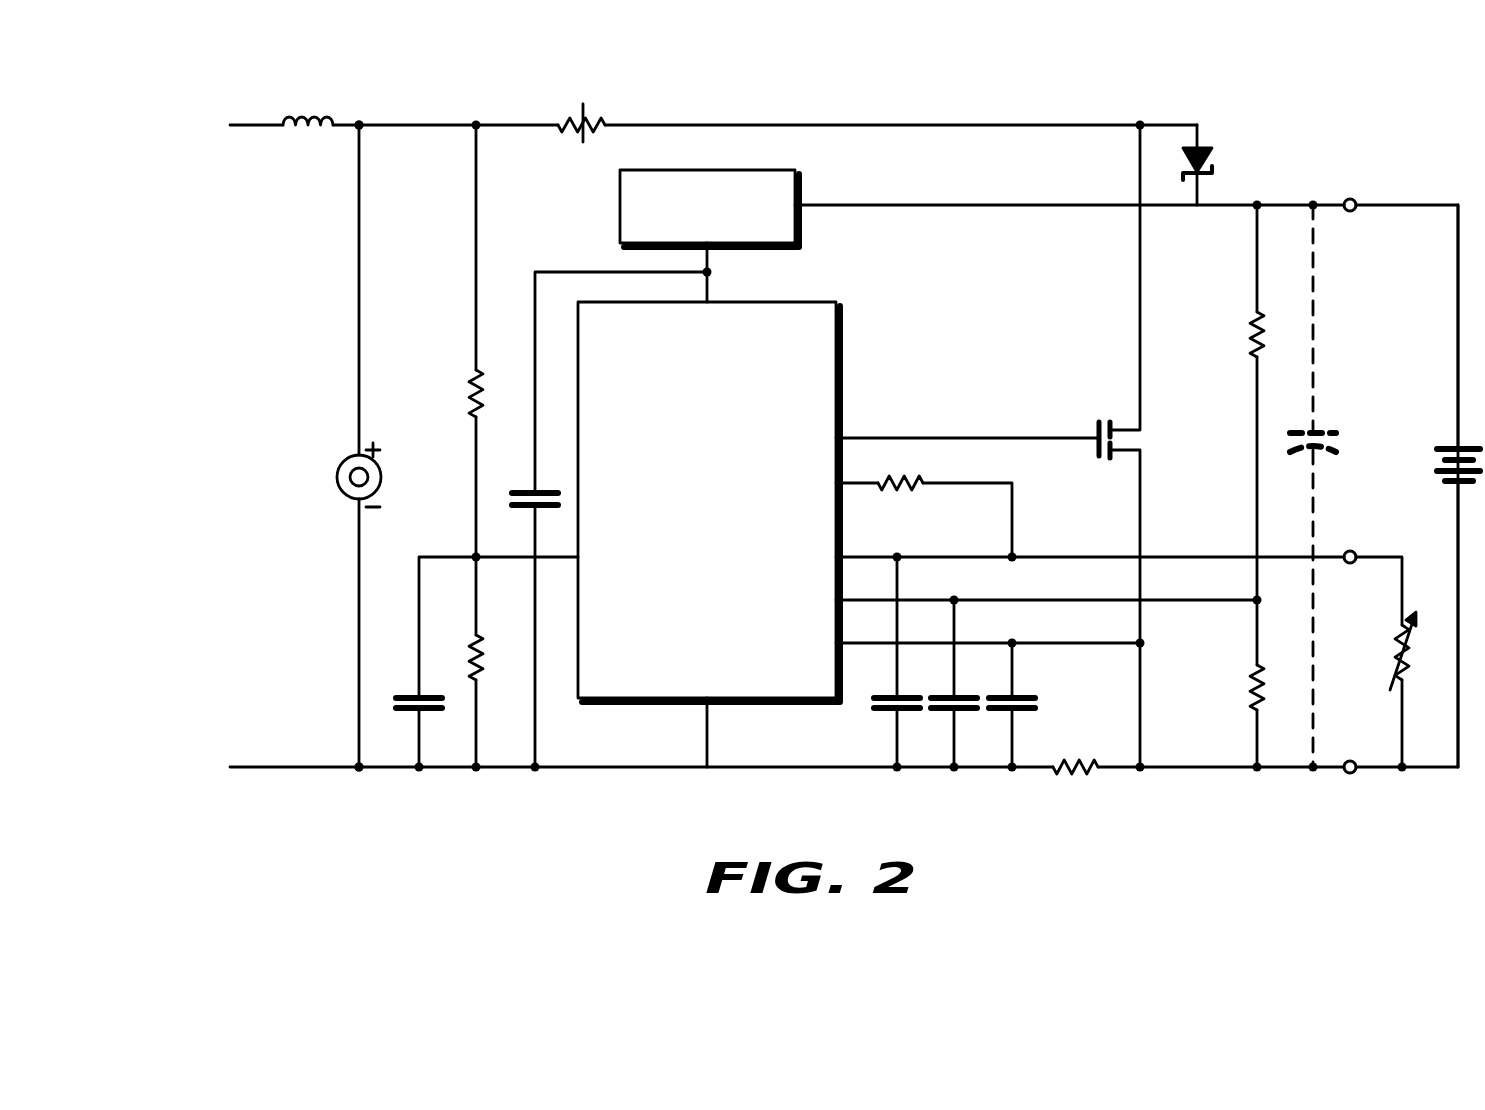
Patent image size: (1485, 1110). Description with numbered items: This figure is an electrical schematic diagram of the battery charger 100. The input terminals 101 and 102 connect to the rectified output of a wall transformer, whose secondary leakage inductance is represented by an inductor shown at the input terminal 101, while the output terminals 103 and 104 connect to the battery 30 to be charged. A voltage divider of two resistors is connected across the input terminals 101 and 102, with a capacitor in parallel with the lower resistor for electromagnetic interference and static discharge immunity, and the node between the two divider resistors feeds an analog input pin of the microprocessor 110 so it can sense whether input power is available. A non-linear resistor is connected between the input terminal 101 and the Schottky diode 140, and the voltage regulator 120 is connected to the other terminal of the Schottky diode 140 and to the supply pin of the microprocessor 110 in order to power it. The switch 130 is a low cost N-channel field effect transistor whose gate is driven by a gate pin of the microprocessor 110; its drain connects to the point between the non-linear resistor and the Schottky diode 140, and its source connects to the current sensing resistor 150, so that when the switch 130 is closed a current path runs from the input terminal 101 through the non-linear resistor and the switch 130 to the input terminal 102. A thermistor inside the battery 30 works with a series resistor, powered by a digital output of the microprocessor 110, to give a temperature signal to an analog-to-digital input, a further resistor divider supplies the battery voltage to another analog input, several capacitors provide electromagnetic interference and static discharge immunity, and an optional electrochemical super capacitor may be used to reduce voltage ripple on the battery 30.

The battery charger 100 is at (815, 455).
The input terminal 101 is at (360, 125).
The input terminal 102 is at (359, 767).
The output terminal 103 is at (1354, 200).
The output terminal 104 is at (1350, 774).
The microprocessor controller 110 is at (815, 302).
The voltage regulator 120 is at (620, 214).
The switch 130 is at (1103, 422).
The Schottky diode 140 is at (1208, 150).
The current sensing resistor 150 is at (1075, 778).
The battery 30 is at (1437, 448).